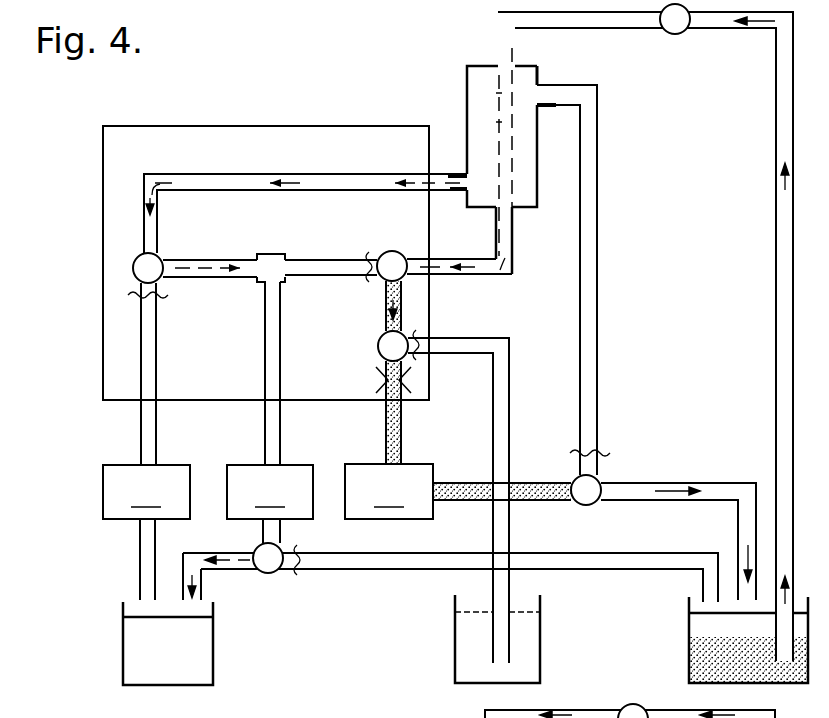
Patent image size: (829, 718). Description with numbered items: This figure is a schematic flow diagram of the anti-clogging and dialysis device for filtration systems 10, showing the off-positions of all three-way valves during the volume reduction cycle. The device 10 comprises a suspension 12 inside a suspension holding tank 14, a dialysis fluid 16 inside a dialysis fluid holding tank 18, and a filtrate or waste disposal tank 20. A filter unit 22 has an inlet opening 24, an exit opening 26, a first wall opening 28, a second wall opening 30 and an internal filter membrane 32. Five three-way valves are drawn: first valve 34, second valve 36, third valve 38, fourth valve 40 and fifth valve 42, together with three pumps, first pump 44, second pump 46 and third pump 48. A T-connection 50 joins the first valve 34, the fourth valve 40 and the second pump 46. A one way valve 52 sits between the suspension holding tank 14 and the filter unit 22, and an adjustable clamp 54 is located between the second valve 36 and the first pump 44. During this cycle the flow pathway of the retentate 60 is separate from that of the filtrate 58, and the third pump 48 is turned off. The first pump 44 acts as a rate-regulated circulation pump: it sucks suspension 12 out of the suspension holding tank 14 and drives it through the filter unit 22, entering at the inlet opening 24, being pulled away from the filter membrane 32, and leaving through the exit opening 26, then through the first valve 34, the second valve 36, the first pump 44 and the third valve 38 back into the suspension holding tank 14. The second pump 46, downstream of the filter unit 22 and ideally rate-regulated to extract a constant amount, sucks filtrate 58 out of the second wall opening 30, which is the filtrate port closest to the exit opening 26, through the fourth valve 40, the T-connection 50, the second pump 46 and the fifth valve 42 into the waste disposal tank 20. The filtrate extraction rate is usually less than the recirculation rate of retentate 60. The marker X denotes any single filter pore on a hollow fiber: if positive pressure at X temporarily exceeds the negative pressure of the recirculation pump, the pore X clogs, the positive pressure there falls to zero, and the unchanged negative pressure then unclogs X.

The anti-clogging and dialysis device for filtration systems 10 is at (287, 110).
The suspension 12 is at (716, 655).
The suspension holding tank 14 is at (688, 640).
The dialysis fluid 16 is at (520, 667).
The dialysis fluid holding tank 18 is at (455, 650).
The filtrate or waste disposal tank 20 is at (215, 658).
The filter unit 22 is at (530, 82).
The inlet opening 24 is at (498, 63).
The exit opening 26 is at (516, 222).
The first wall opening 28 is at (554, 108).
The second wall opening 30 is at (462, 172).
The internal filter membrane 32 is at (497, 122).
The first valve 34 is at (391, 256).
The second valve 36 is at (378, 342).
The third valve 38 is at (598, 480).
The fourth valve 40 is at (133, 263).
The fifth valve 42 is at (270, 573).
The first pump 44 is at (389, 491).
The second pump 46 is at (270, 492).
The third pump 48 is at (146, 492).
The T-connection 50 is at (281, 262).
The one way valve 52 is at (681, 34).
The adjustable clamp 54 is at (386, 380).
The filtrate 58 is at (415, 177).
The retentate 60 is at (513, 273).
The filter pore X is at (497, 93).